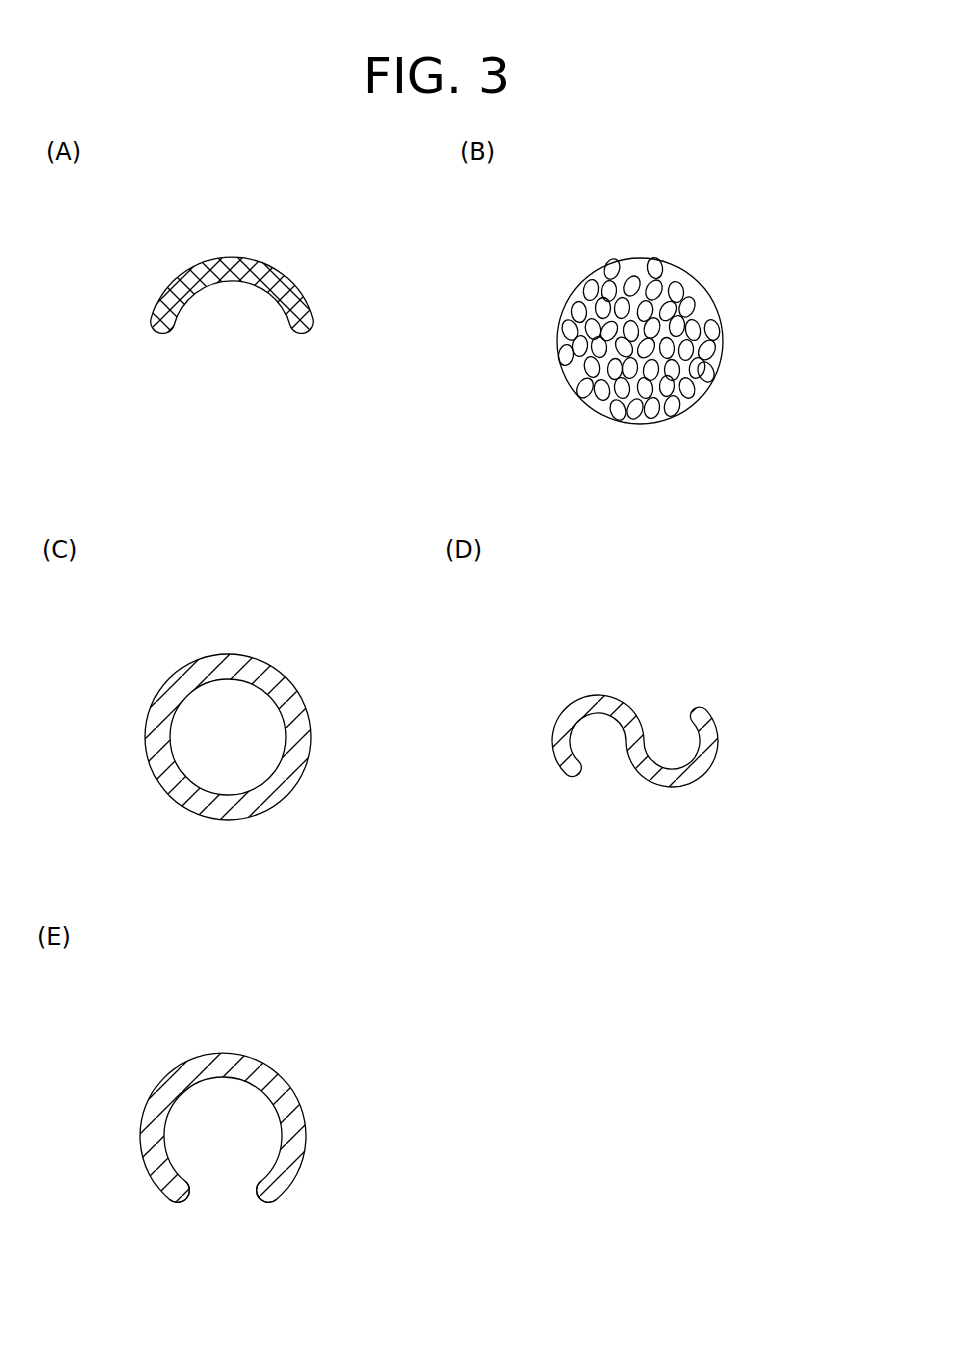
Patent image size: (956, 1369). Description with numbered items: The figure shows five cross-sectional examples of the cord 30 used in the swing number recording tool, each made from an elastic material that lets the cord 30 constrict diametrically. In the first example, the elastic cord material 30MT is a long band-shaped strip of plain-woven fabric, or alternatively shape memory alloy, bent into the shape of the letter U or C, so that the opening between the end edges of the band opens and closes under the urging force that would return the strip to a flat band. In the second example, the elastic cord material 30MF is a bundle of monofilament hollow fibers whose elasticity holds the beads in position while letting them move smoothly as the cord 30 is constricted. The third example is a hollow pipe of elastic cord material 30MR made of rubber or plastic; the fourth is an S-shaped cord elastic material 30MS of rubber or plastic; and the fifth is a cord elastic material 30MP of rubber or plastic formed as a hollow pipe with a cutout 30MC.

The cord 30 is at (486, 737).
The elastic cord material 30MT is at (216, 257).
The elastic cord material 30MF is at (713, 347).
The elastic cord material 30MR is at (300, 737).
The cord elastic material 30MS is at (706, 753).
The cord elastic material 30MP is at (295, 1127).
The cutout 30MC is at (230, 1208).